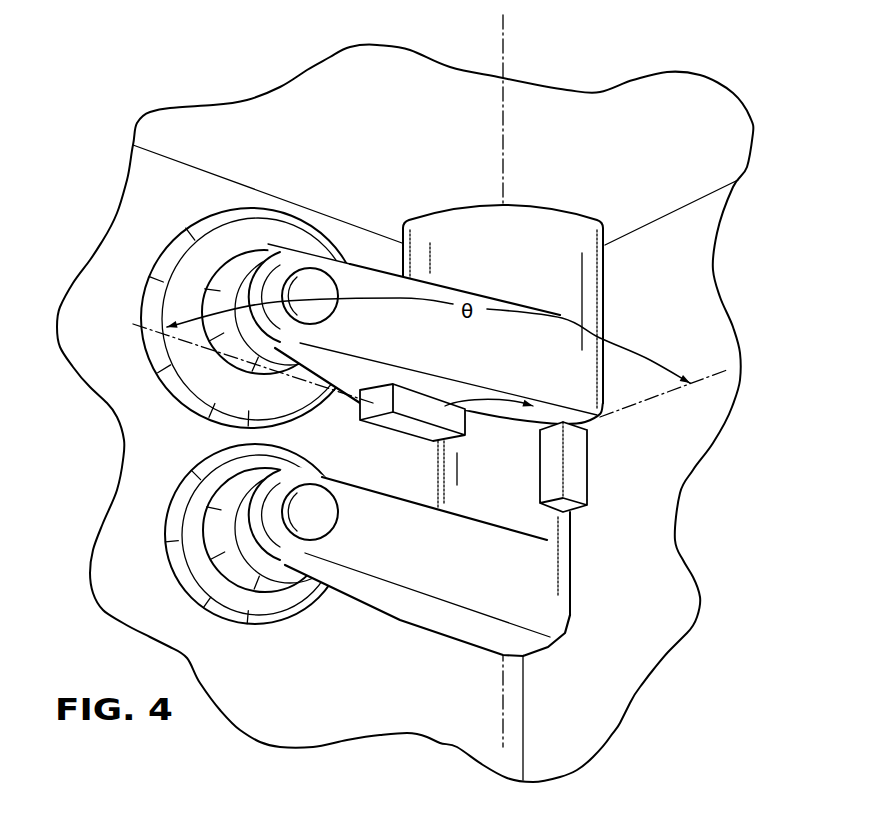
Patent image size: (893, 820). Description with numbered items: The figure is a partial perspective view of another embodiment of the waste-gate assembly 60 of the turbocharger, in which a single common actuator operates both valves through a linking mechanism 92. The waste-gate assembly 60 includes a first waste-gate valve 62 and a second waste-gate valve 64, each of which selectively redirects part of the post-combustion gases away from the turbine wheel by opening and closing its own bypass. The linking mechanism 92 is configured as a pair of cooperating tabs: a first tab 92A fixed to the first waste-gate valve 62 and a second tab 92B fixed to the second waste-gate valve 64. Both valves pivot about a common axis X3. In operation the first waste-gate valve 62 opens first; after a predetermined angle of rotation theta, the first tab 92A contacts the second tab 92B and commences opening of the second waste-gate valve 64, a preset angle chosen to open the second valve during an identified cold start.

The waste-gate assembly 60 is at (100, 160).
The first waste-gate valve 62 is at (283, 227).
The second waste-gate valve 64 is at (283, 600).
The linking mechanism 92 is at (573, 464).
The first tab 92A is at (387, 420).
The second tab 92B is at (573, 482).
The common axis X3 is at (505, 50).